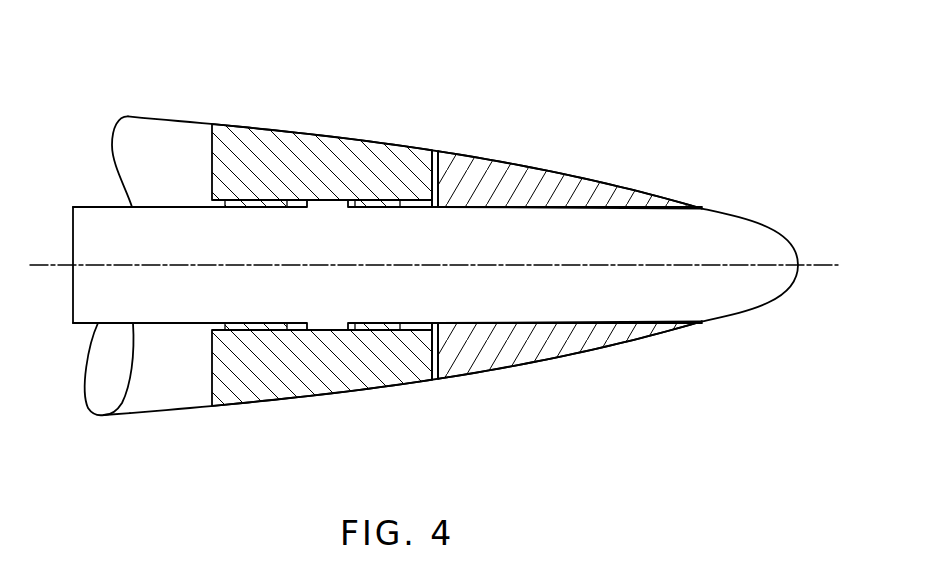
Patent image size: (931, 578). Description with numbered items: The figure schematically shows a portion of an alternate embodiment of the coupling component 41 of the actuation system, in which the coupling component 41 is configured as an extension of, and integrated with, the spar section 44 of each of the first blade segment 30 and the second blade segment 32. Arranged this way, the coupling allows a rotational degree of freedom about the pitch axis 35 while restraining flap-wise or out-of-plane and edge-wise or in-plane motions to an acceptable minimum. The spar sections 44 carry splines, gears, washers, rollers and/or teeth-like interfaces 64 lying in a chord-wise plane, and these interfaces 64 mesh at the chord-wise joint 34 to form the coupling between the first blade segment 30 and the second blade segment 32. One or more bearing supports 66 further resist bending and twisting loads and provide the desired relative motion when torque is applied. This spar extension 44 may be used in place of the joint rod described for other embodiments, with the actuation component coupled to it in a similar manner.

The first blade segment 30 is at (615, 179).
The second blade segment 32 is at (168, 116).
The chord-wise joint 34 is at (440, 399).
The pitch axis 35 is at (807, 257).
The coupling component 41 is at (352, 152).
The spar section 44 is at (230, 384).
The teeth-like interfaces 64 is at (325, 213).
The bearing supports 66 is at (237, 199).